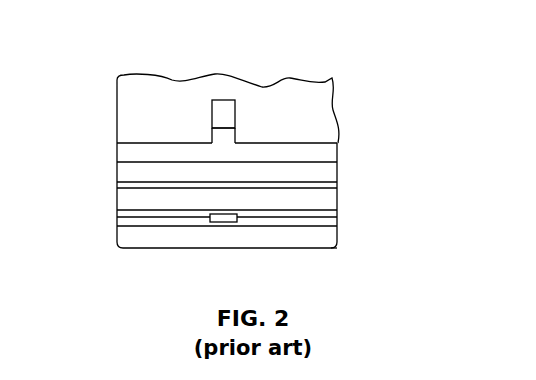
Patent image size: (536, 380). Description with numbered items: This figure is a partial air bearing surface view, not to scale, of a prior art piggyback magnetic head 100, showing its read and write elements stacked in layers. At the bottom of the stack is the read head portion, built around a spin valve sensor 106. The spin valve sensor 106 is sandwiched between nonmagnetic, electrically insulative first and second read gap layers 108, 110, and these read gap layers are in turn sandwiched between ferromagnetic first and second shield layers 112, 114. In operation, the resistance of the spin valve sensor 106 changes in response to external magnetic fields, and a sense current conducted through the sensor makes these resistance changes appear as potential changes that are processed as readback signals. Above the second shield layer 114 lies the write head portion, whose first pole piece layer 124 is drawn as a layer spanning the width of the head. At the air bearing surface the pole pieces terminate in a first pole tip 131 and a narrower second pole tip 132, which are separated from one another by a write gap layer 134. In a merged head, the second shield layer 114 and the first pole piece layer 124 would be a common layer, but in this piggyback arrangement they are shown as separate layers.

The piggyback magnetic head 100 is at (353, 132).
The spin valve sensor 106 is at (226, 226).
The first read gap layer 108 is at (160, 227).
The second read gap layer 110 is at (308, 212).
The first shield layer 112 is at (325, 239).
The second shield layer 114 is at (118, 203).
The first pole piece layer 124 is at (118, 178).
The first pole tip 131 is at (118, 153).
The second pole tip 132 is at (228, 112).
The write gap layer 134 is at (210, 128).